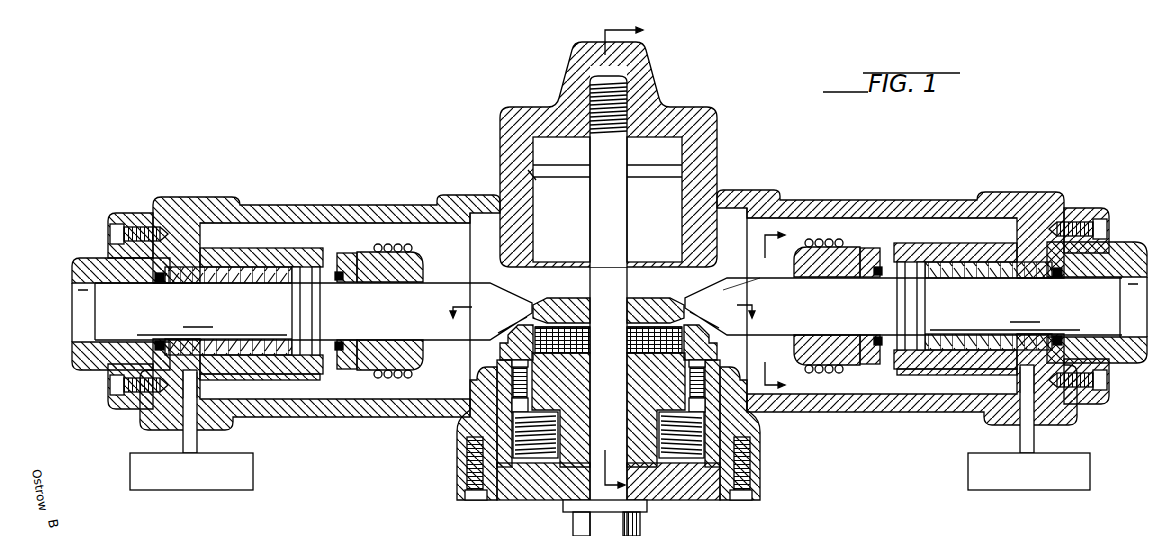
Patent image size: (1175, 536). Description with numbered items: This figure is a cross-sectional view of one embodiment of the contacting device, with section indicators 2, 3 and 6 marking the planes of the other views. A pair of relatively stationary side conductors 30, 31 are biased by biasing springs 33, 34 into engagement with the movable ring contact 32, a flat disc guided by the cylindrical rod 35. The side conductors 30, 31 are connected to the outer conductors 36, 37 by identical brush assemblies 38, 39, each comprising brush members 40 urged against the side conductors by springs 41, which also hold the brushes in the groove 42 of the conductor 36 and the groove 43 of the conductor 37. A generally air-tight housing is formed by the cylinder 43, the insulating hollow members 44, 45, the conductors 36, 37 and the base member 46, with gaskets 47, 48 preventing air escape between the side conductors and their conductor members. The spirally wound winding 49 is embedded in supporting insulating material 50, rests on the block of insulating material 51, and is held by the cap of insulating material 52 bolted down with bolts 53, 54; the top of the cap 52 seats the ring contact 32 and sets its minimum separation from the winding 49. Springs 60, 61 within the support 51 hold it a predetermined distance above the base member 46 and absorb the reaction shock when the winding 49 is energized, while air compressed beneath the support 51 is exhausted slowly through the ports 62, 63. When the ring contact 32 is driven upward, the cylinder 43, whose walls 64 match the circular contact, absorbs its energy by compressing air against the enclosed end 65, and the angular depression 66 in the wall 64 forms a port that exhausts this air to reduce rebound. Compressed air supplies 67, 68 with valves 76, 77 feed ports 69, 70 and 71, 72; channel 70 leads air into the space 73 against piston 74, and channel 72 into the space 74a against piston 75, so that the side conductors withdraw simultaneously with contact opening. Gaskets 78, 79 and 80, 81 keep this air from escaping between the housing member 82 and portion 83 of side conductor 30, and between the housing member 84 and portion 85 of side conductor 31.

The section line 2- 2 is at (604, 319).
The section line 3- 3 is at (630, 263).
The section line 6- 6 is at (780, 309).
The side conductor 30 is at (511, 313).
The side conductor 31 is at (728, 311).
The movable ring contact 32 is at (648, 312).
The biasing spring 33 is at (247, 284).
The biasing spring 34 is at (997, 282).
The cylindrical rod 35 is at (628, 230).
The outer conductor 36 is at (279, 246).
The outer conductor 37 is at (949, 250).
The brush assembly 38 is at (458, 250).
The brush assembly 39 is at (870, 241).
The brush member 40 is at (424, 268).
The spring 41 is at (392, 247).
The groove 42 is at (352, 258).
The cylinder 43 is at (698, 138).
The hollow member 44 is at (881, 204).
The hollow member 45 is at (313, 204).
The base member 46 is at (690, 501).
The gasket 47 is at (342, 270).
The gasket 48 is at (875, 264).
The spirally wound winding 49 is at (573, 356).
The supporting insulating material 50 is at (540, 356).
The block of insulating material 51 is at (561, 410).
The cap of insulating material 52 is at (700, 352).
The bolt 53 is at (529, 390).
The bolt 54 is at (645, 388).
The spring 60 is at (558, 436).
The spring 61 is at (657, 436).
The port 62 is at (462, 428).
The port 63 is at (752, 428).
The cylinder wall 64 is at (534, 237).
The enclosed end 65 is at (543, 126).
The angular depression 66 is at (534, 182).
The compressed air supply 67 is at (254, 468).
The compressed air supply 68 is at (1091, 468).
The port 69 is at (198, 392).
The channel 70 is at (260, 380).
The port 71 is at (1028, 398).
The channel 72 is at (941, 365).
The space 73 is at (326, 266).
The piston 74 is at (322, 318).
The space 74a is at (866, 372).
The piston 75 is at (897, 305).
The valve 76 is at (192, 443).
The valve 77 is at (1029, 440).
The gasket 78 is at (163, 283).
The gasket 79 is at (304, 266).
The gasket 80 is at (907, 264).
The gasket 81 is at (1052, 277).
The housing member 82 is at (75, 262).
The portion of side conductor 83 is at (140, 325).
The housing member 84 is at (1128, 252).
The portion of side conductor 85 is at (1093, 313).